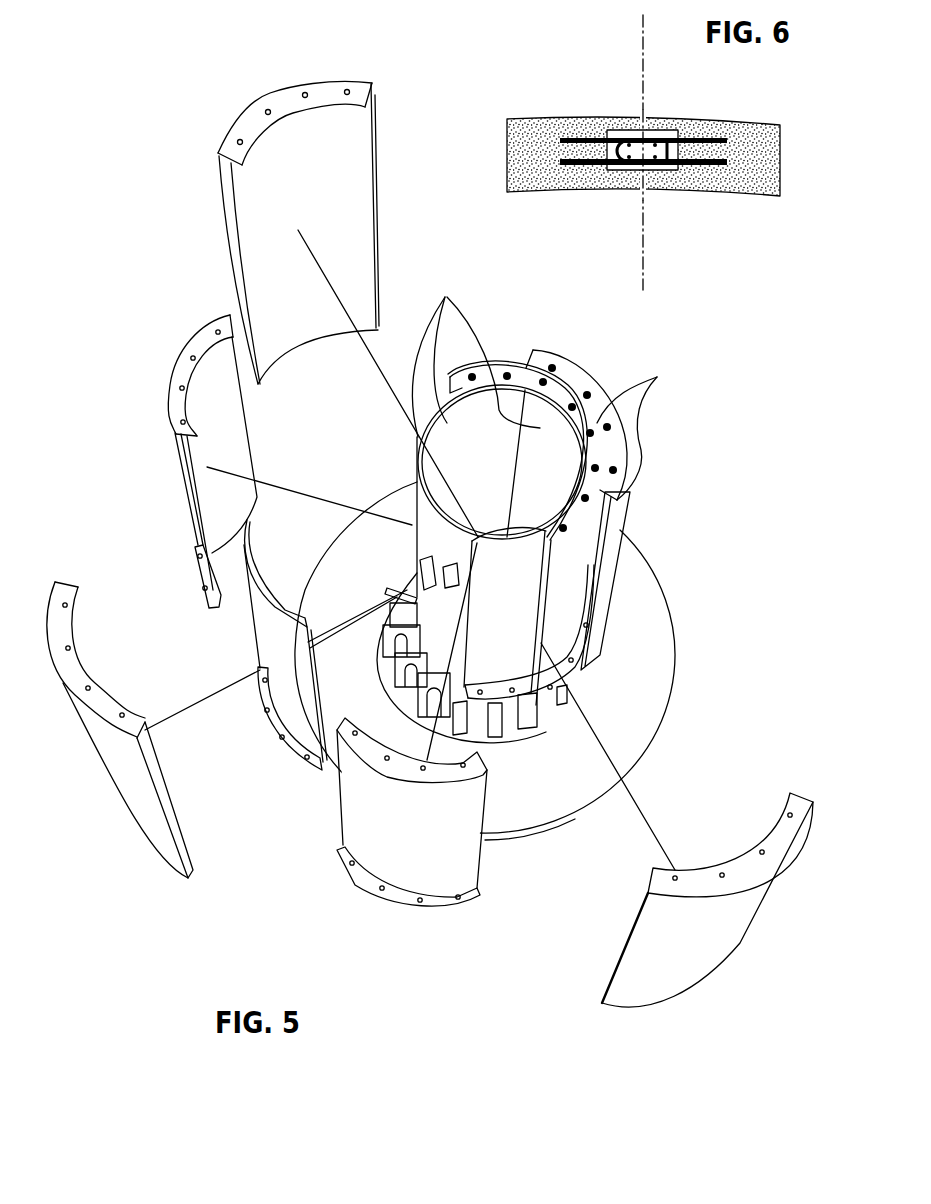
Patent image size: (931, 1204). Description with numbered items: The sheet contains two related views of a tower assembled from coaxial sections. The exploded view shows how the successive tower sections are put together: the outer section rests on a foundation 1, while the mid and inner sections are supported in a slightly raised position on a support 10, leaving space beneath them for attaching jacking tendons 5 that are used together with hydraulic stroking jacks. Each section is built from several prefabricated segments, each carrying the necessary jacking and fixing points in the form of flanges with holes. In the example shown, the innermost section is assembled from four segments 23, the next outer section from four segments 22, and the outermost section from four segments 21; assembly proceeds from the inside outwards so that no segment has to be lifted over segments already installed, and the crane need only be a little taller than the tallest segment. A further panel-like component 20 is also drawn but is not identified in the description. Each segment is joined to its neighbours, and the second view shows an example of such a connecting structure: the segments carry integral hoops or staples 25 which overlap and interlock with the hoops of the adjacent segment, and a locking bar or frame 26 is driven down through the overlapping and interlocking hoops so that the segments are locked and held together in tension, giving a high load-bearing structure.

In FIG. 5, the foundation 1 is at (670, 688).
In FIG. 5, the jacking tendons 5 is at (577, 380).
In FIG. 5, the support 10 is at (545, 645).
In FIG. 5, the wall panel 20 is at (358, 203).
In FIG. 5, the segment 21 is at (163, 847).
In FIG. 6, the segment 21 is at (552, 178).
In FIG. 5, the segment 22 is at (412, 873).
In FIG. 5, the segment 23 is at (300, 740).
In FIG. 6, the hoops or staples 25 is at (590, 137).
In FIG. 6, the locking bar or frame 26 is at (633, 164).